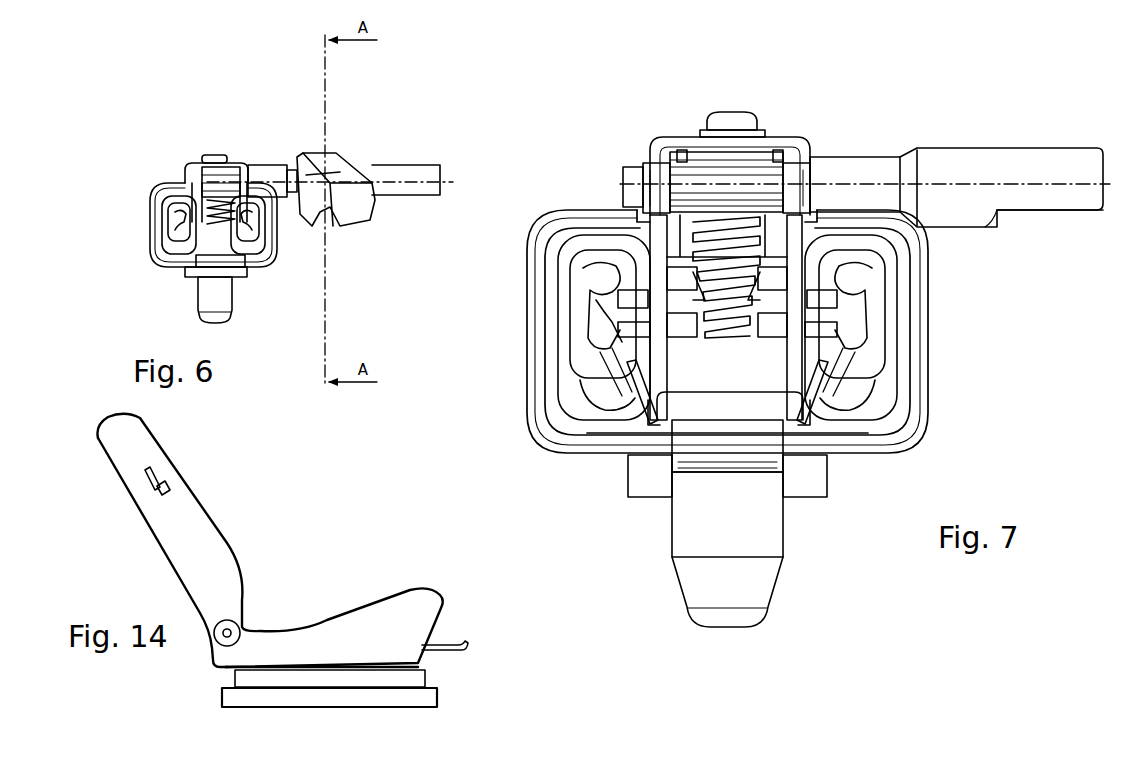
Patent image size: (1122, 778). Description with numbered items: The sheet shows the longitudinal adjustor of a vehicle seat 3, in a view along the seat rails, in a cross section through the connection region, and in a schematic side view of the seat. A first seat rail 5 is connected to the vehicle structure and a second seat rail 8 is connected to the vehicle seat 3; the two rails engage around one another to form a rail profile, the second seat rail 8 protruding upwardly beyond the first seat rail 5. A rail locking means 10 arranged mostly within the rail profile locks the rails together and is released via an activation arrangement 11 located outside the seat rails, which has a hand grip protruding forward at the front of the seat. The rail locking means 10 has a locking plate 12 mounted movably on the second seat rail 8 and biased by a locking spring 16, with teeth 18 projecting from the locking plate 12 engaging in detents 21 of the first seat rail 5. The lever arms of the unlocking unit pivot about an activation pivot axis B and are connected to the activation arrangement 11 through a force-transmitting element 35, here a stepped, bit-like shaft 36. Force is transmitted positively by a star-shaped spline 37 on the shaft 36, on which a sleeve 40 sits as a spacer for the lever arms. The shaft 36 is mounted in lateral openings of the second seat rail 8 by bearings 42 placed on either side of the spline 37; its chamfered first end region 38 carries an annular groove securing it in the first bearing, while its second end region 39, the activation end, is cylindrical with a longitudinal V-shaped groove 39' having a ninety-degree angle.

In FIG. 14, the vehicle seat 3 is at (250, 510).
In FIG. 7, the first seat rail 5 is at (570, 420).
In FIG. 14, the first seat rail 5 is at (223, 700).
In FIG. 7, the second seat rail 8 is at (670, 138).
In FIG. 14, the second seat rail 8 is at (408, 680).
In FIG. 7, the rail locking means 10 is at (580, 107).
In FIG. 14, the activation arrangement 11 is at (450, 642).
In FIG. 7, the locking plate 12 is at (682, 333).
In FIG. 7, the locking spring 16 is at (673, 260).
In FIG. 7, the teeth 18 is at (620, 303).
In FIG. 7, the detents 21 is at (640, 293).
In FIG. 6, the force-transmitting element 35 is at (258, 177).
In FIG. 7, the force-transmitting element 35 is at (963, 219).
In FIG. 7, the shaft 36 is at (852, 180).
In FIG. 7, the star-shaped spline 37 is at (733, 187).
In FIG. 7, the first end region 38 is at (618, 180).
In FIG. 7, the second end region 39 is at (1008, 153).
In FIG. 7, the V-shaped groove 39' is at (1051, 243).
In FIG. 7, the sleeve 40 is at (755, 153).
In FIG. 7, the bearings 42 is at (640, 158).
In FIG. 7, the activation pivot axis B is at (955, 182).